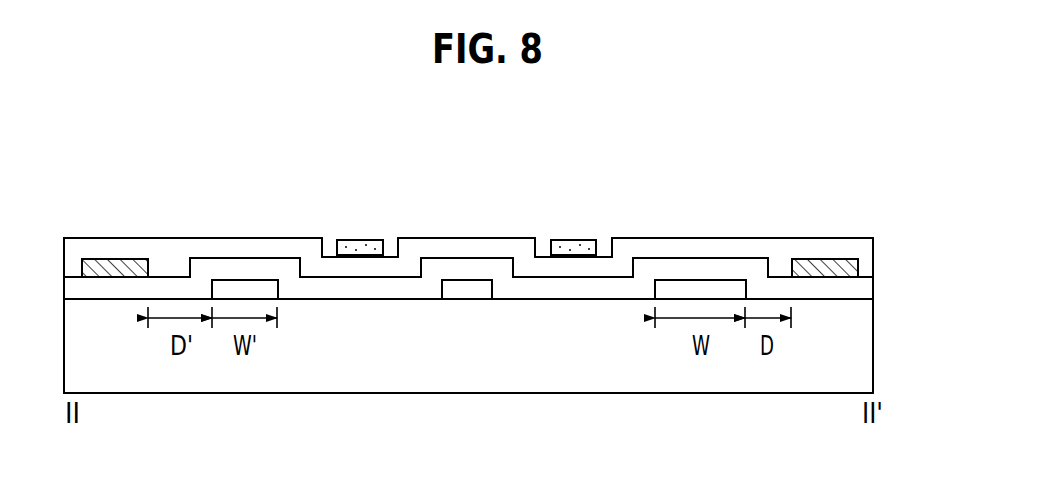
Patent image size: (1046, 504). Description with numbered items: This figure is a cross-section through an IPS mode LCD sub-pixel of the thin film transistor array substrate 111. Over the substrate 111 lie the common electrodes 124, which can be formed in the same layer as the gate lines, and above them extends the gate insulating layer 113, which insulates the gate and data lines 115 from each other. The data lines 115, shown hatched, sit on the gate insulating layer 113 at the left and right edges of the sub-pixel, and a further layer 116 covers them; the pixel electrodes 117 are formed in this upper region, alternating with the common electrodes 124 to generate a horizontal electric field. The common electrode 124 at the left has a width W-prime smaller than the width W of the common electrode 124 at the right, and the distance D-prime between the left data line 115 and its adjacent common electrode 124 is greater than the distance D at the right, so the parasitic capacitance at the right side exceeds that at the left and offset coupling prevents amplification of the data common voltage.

The thin film transistor array substrate 111 is at (873, 345).
The gate insulating layer 113 is at (873, 288).
The data line 115 is at (118, 258).
The insulating layer 116 is at (873, 260).
The pixel electrode 117 is at (363, 248).
The common electrode 124 is at (241, 287).